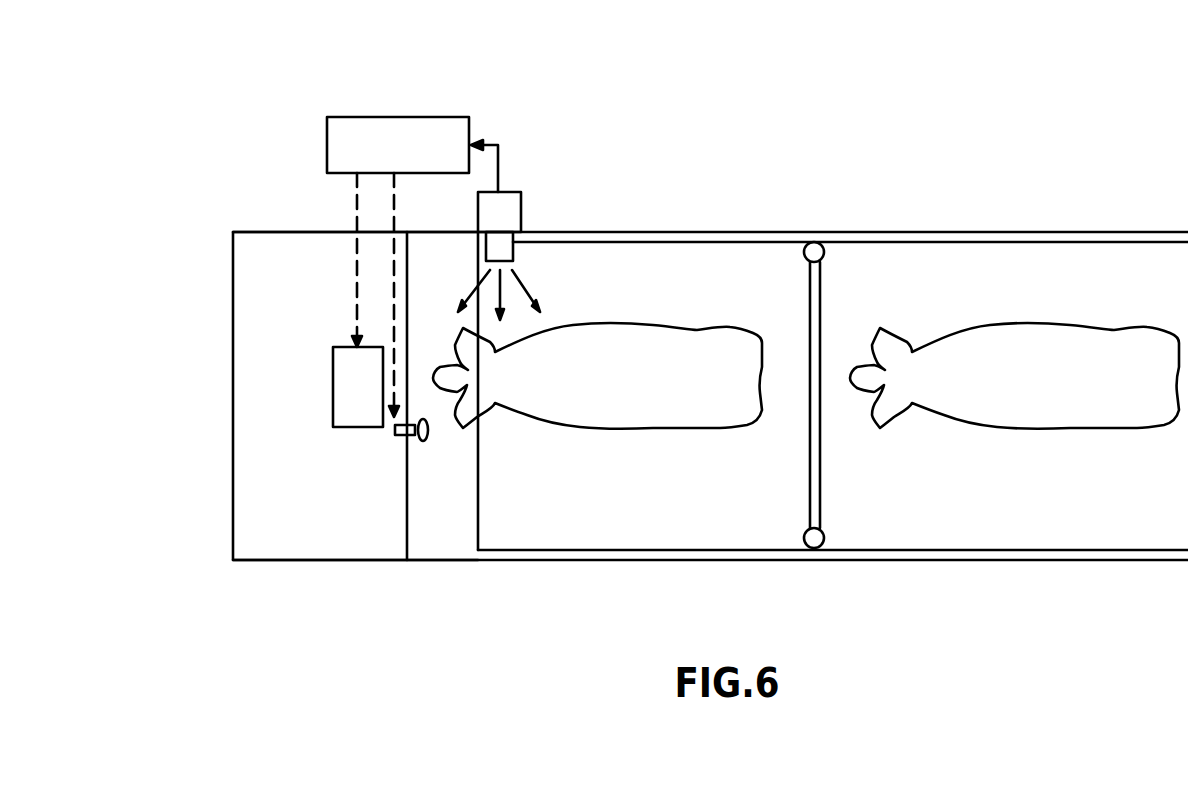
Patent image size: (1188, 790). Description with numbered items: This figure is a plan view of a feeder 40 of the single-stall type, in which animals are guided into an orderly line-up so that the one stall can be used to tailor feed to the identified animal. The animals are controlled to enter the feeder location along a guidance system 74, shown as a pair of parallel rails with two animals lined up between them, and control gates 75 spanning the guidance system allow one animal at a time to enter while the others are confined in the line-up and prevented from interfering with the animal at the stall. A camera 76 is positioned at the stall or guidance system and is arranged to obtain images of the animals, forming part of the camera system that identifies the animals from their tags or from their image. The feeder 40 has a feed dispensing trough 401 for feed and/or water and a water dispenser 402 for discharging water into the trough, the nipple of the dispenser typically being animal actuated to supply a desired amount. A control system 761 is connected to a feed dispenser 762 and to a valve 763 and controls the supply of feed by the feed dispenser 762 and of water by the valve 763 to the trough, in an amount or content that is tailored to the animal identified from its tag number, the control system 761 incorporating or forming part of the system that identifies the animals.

The feeder 40 is at (287, 242).
The feed dispensing trough 401 is at (437, 527).
The water dispenser 402 is at (428, 437).
The guidance system 74 is at (700, 233).
The control gates 75 is at (820, 285).
The camera 76 is at (507, 250).
The control system 761 is at (398, 117).
The feed dispenser 762 is at (347, 373).
The valve 763 is at (397, 437).